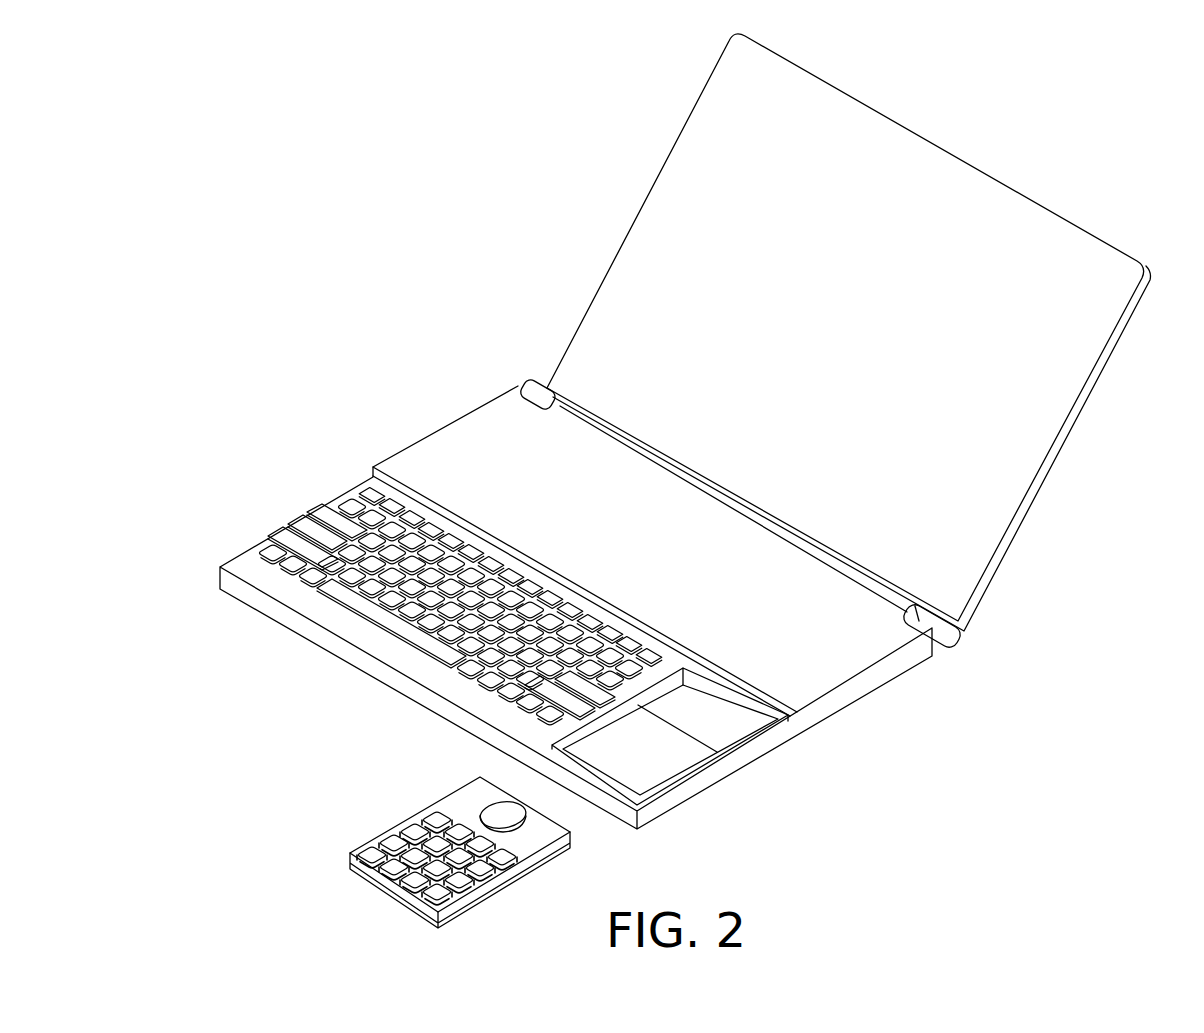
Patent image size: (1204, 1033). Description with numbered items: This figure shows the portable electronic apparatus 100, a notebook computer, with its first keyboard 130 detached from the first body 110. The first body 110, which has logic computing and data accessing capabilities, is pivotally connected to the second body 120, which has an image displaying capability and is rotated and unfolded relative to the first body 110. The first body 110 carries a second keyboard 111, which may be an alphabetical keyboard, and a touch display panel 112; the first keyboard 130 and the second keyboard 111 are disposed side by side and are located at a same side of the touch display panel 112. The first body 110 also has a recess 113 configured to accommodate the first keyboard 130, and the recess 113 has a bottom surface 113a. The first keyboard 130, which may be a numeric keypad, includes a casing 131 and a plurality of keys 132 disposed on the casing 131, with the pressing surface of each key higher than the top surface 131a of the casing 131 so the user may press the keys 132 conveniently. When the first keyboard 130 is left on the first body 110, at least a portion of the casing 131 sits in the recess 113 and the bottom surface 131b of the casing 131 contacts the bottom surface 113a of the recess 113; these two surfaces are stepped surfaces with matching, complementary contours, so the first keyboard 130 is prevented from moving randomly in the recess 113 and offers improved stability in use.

The portable electronic apparatus 100 is at (1203, 868).
The first body 110 is at (634, 579).
The second keyboard 111 is at (302, 603).
The touch display panel 112 is at (462, 445).
The recess 113 is at (808, 746).
The bottom surface of the recess 113a is at (679, 761).
The second body 120 is at (1050, 410).
The first keyboard 130 is at (461, 825).
The casing 131 is at (496, 825).
The top surface of the casing 131a is at (474, 800).
The bottom surface of the casing 131b is at (511, 902).
The keys 132 is at (420, 818).